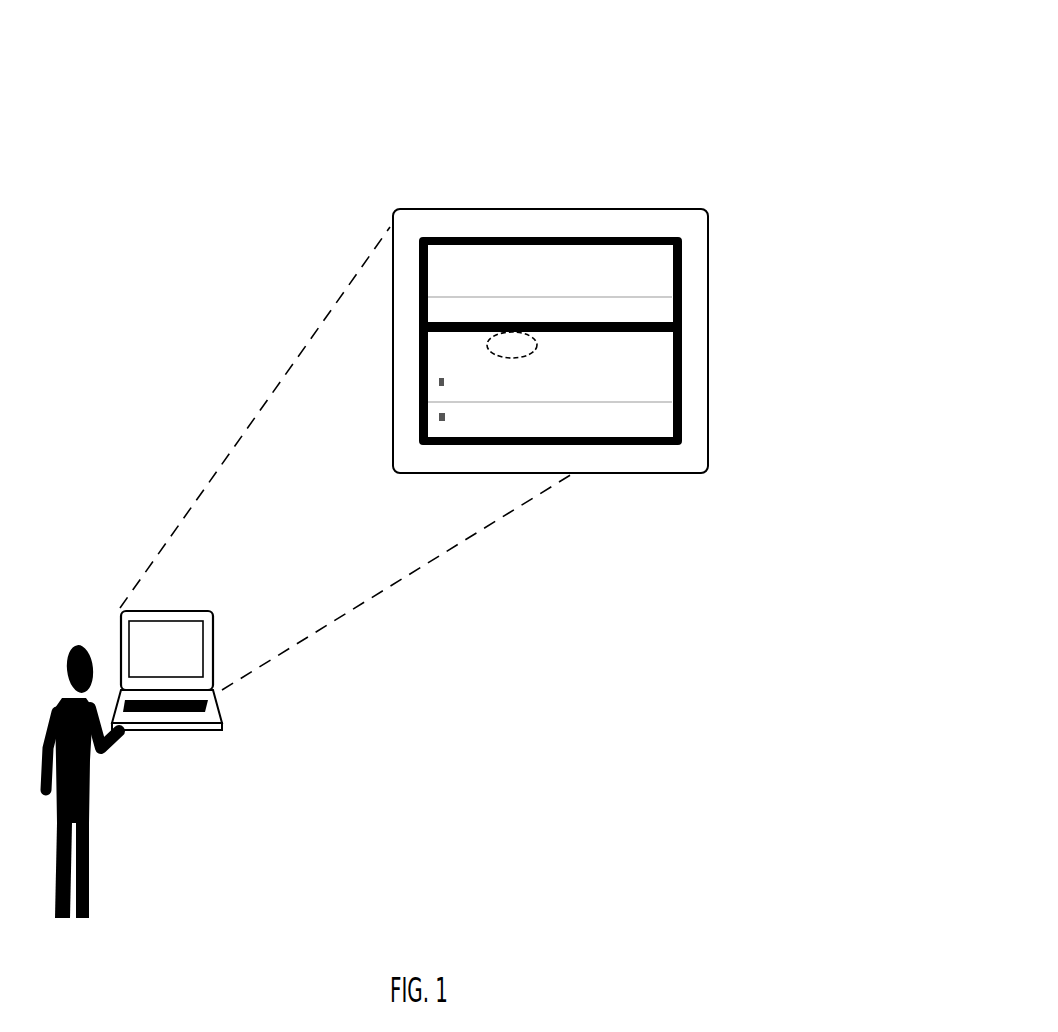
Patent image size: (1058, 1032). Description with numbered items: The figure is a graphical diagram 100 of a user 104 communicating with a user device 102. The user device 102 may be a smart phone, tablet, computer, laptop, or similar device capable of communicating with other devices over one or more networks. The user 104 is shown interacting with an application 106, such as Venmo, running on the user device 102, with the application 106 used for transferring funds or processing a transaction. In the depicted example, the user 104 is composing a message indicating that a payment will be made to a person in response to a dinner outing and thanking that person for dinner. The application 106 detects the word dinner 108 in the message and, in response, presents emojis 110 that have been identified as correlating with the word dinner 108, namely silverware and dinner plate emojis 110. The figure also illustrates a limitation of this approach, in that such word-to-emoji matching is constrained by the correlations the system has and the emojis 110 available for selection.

The graphical diagram 100 is at (881, 76).
The user device 102 is at (210, 611).
The user 104 is at (85, 880).
The application 106 is at (717, 251).
The word dinner 108 is at (575, 341).
The emojis 110 is at (639, 405).